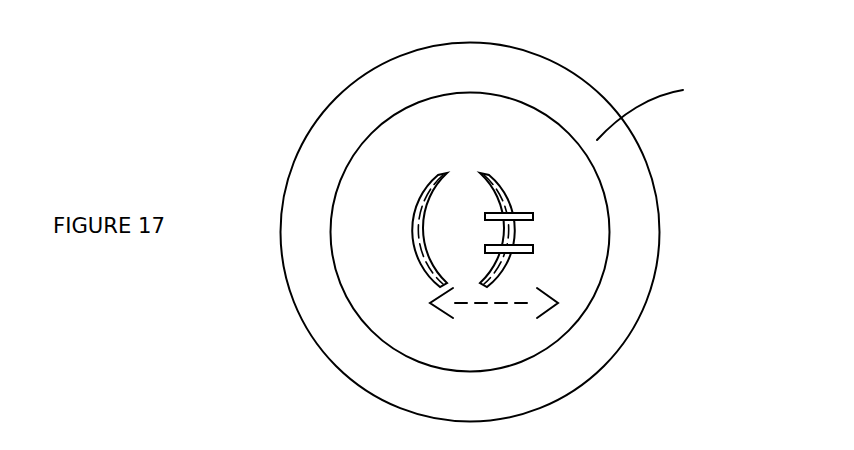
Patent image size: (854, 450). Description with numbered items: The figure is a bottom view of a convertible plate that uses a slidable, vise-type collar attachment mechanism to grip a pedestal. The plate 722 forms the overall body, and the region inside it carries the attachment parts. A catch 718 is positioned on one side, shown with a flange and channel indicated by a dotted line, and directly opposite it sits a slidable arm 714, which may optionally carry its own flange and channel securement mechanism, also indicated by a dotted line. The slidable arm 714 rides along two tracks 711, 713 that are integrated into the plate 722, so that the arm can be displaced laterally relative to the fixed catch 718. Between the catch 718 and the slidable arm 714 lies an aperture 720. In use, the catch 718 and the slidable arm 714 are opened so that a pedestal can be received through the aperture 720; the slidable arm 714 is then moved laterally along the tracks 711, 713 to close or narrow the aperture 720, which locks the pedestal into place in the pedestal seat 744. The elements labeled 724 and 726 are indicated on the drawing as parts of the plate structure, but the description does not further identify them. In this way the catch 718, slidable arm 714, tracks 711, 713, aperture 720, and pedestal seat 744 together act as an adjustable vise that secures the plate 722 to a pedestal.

The aperture 720 is at (471, 165).
The plate 722 is at (543, 135).
The outer haptic ring 724 is at (602, 180).
The peripheral zone 726 is at (597, 140).
The track 711 is at (533, 216).
The track 713 is at (533, 249).
The slidable arm 714 is at (509, 264).
The catch 718 is at (413, 250).
The pedestal seat 744 is at (458, 210).